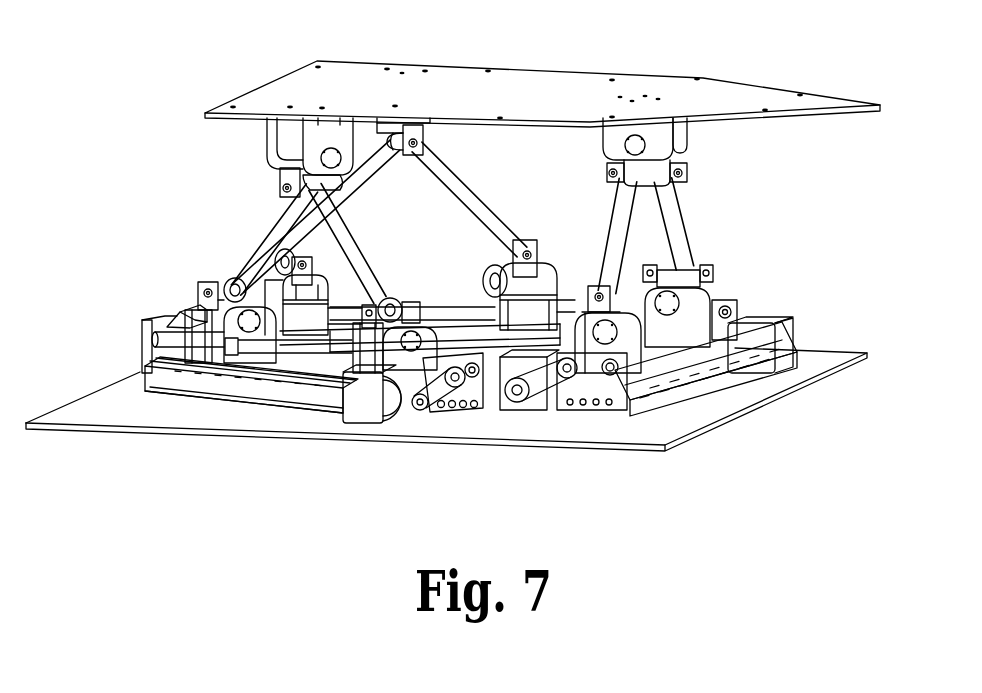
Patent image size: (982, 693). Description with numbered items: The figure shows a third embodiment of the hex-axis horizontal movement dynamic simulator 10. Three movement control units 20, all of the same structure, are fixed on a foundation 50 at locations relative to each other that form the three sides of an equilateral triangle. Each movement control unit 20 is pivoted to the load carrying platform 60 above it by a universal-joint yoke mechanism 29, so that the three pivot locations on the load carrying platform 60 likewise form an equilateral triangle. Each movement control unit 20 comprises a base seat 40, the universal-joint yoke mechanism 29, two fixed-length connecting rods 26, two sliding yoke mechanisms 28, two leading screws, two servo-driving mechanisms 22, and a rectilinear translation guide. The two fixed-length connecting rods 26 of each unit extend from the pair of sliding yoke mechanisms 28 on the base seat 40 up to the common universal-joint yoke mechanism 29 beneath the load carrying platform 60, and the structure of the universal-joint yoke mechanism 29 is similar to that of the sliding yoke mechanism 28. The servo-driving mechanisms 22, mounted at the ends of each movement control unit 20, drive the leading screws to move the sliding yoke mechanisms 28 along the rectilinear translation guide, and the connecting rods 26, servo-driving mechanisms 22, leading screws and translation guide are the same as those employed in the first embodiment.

The hex-axis horizontal movement dynamic simulator 10 is at (289, 22).
The load carrying platform 60 is at (566, 78).
The universal-joint yoke mechanism 29 is at (262, 183).
The fixed-length connecting rod 26 is at (276, 237).
The sliding yoke mechanism 28 is at (203, 277).
The movement control unit 20 is at (199, 419).
The base seat 40 is at (262, 398).
The servo-driving mechanism 22 is at (162, 307).
The foundation 50 is at (93, 400).